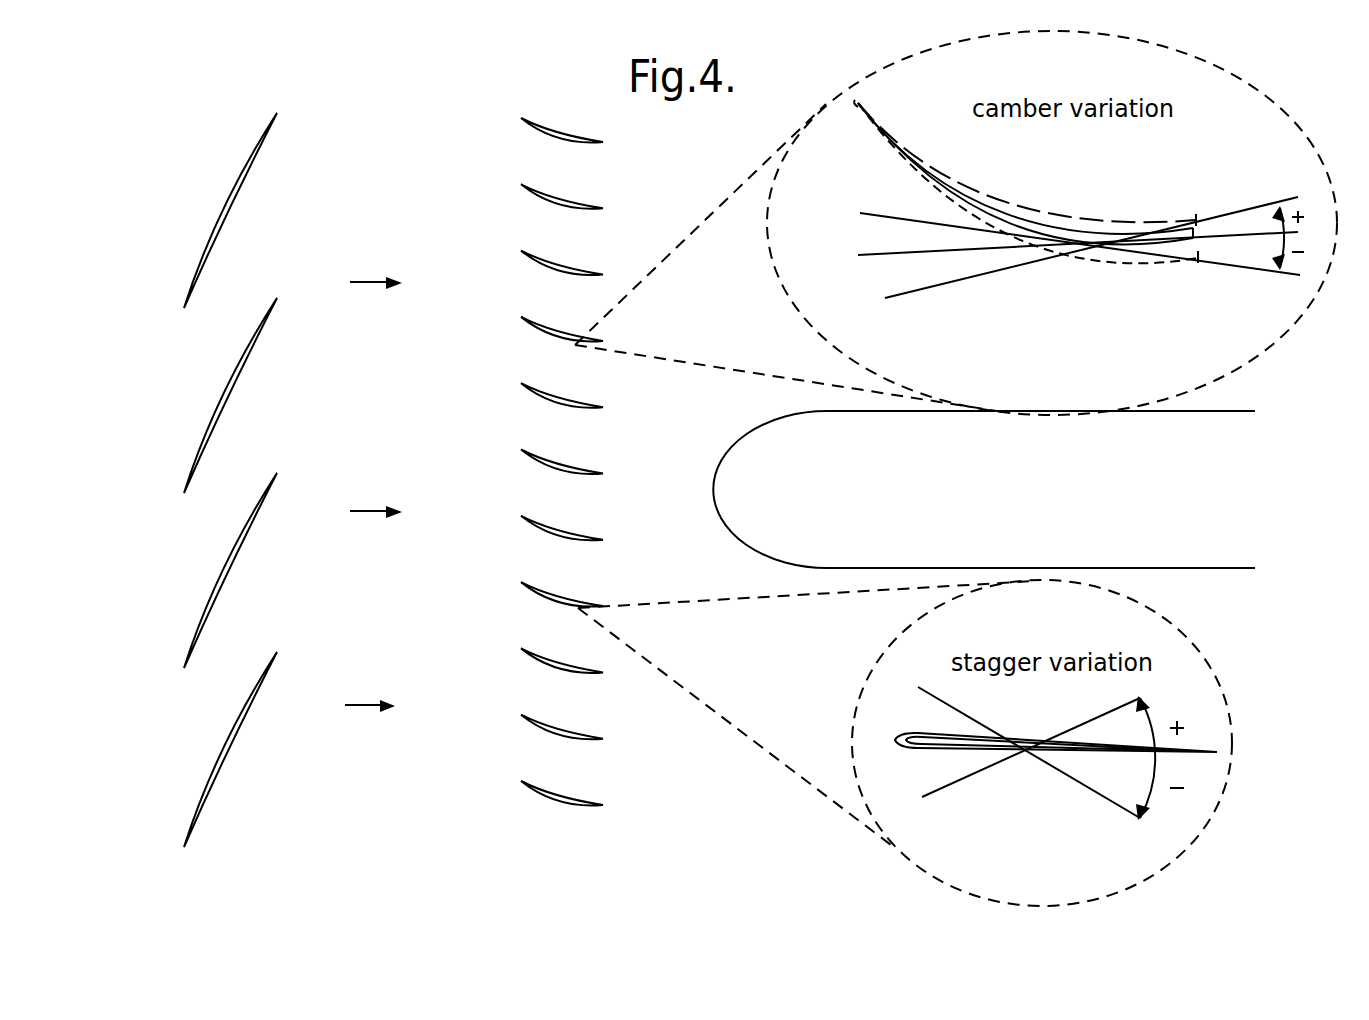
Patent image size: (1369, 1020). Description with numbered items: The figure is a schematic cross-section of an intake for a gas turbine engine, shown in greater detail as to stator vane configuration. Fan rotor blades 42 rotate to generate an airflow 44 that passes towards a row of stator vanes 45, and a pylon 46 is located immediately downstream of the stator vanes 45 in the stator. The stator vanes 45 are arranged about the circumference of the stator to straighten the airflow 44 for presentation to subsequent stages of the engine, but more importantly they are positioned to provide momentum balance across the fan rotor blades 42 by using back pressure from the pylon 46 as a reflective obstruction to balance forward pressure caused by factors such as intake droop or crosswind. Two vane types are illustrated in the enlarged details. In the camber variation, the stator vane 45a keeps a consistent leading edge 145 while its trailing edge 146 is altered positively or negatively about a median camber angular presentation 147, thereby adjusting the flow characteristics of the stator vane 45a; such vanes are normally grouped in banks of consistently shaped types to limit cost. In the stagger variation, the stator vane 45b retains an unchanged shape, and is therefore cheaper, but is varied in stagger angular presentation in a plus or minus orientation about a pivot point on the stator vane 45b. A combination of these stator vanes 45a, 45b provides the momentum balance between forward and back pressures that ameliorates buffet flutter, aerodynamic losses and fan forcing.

The fan rotor blades 42 is at (213, 231).
The airflow 44 is at (373, 484).
The stator vanes 45 is at (548, 133).
The stator vane with camber variation 45a is at (960, 196).
The stator vane with stagger variation 45b is at (920, 740).
The pylon 46 is at (1040, 516).
The leading edge 145 is at (858, 109).
The trailing edge 146 is at (1165, 243).
The median camber angular presentation 147 is at (1267, 228).